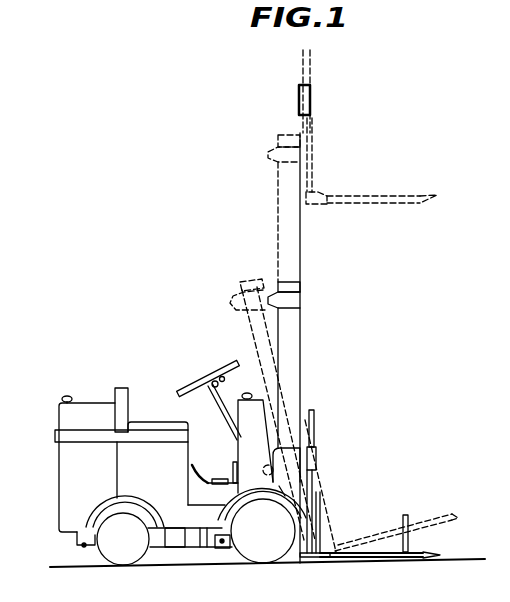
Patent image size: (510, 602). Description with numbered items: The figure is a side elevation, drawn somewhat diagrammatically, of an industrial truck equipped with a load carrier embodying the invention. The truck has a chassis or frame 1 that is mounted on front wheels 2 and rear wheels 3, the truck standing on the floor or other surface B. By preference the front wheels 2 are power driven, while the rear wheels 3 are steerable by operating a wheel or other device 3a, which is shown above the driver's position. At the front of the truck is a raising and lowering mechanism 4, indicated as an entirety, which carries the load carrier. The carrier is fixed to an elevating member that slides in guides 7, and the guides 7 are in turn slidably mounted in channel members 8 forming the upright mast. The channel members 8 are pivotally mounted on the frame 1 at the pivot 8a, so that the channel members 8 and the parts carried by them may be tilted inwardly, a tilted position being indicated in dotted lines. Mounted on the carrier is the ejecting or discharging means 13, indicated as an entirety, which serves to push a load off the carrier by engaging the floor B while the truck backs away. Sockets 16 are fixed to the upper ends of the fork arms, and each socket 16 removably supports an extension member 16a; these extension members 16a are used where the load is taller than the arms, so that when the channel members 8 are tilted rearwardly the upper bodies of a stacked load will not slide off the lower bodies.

The chassis or frame 1 is at (176, 500).
The front wheels 2 is at (250, 550).
The rear wheels 3 is at (118, 553).
The wheel or other device 3a is at (183, 394).
The raising and lowering mechanism 4 is at (288, 496).
The guides 7 is at (293, 240).
The channel members 8 is at (302, 362).
The pivotal mounting 8a is at (270, 467).
The ejecting or discharging means 13 is at (314, 557).
The sockets 16 is at (317, 466).
The extension member 16a is at (315, 430).
The floor or other surface B is at (62, 566).